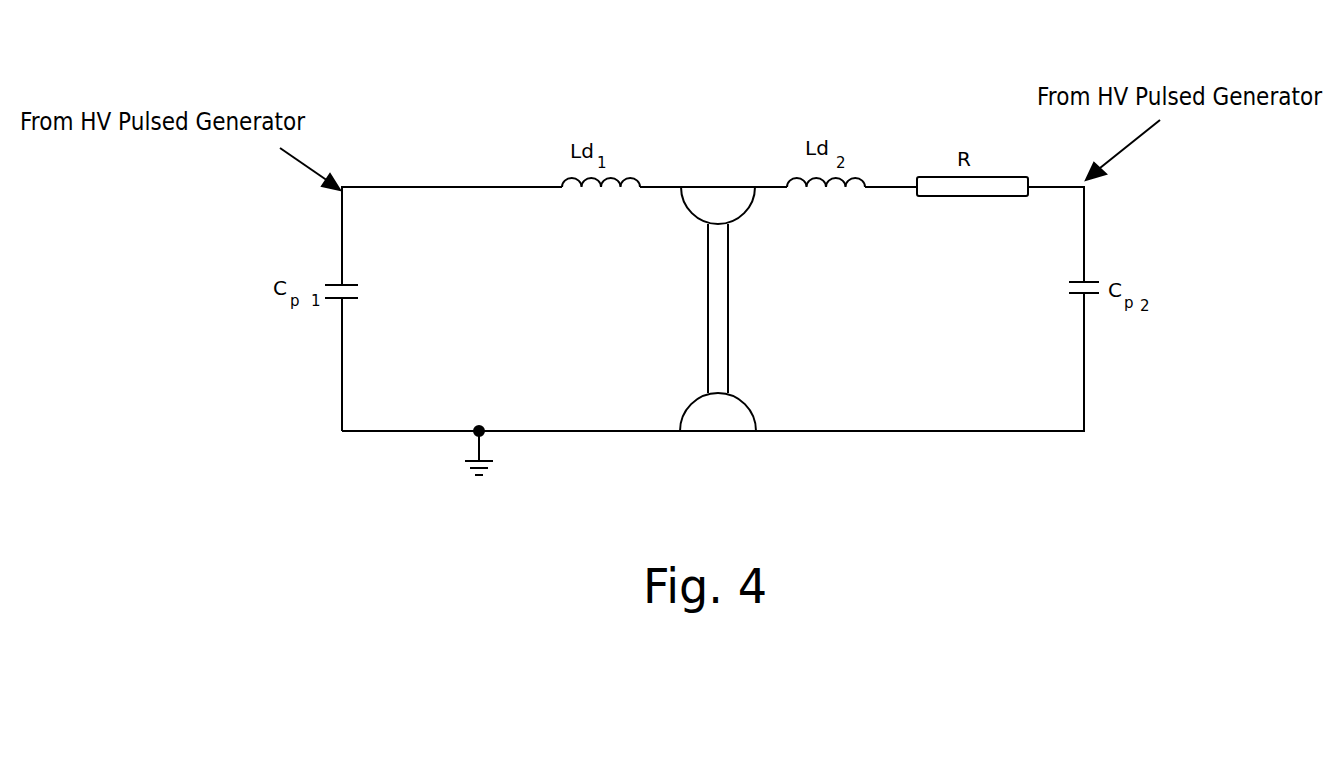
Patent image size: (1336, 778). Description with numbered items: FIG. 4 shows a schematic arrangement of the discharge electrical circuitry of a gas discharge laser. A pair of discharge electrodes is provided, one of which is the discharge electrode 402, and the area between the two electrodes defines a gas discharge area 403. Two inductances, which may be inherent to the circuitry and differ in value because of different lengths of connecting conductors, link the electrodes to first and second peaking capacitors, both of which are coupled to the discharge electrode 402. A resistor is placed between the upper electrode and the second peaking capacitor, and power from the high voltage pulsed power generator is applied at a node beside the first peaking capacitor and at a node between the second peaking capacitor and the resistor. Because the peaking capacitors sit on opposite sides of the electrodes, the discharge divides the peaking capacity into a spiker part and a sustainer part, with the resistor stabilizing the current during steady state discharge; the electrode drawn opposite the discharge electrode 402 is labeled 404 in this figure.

The discharge electrode 402 is at (726, 432).
The gas discharge area 403 is at (729, 296).
The top electrode 404 is at (714, 186).